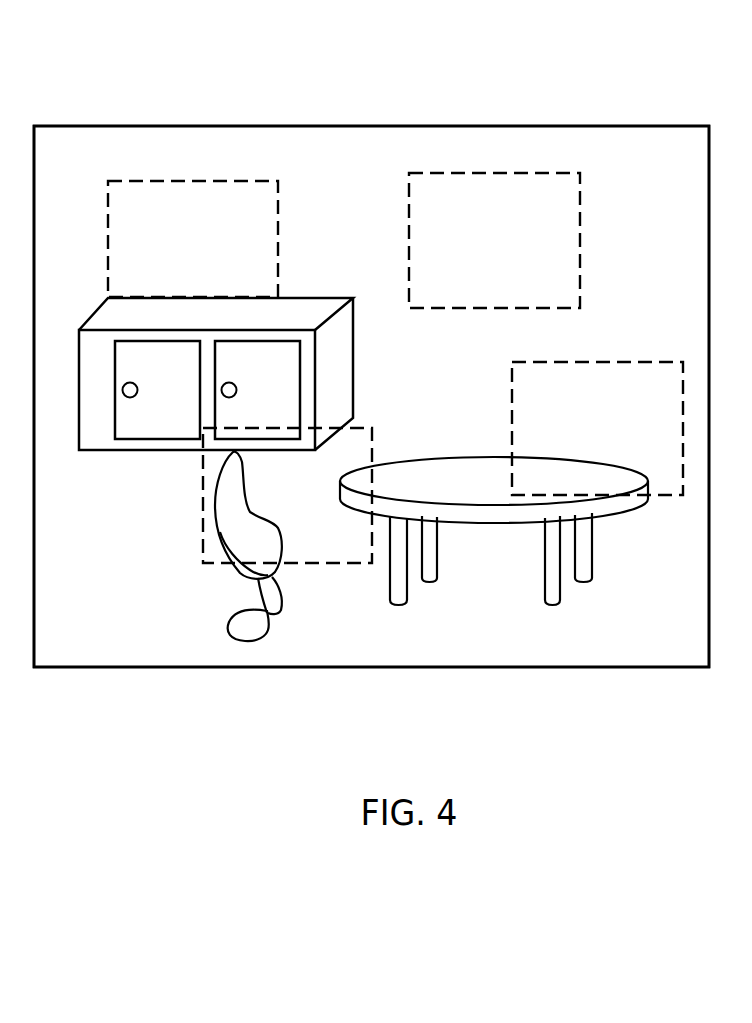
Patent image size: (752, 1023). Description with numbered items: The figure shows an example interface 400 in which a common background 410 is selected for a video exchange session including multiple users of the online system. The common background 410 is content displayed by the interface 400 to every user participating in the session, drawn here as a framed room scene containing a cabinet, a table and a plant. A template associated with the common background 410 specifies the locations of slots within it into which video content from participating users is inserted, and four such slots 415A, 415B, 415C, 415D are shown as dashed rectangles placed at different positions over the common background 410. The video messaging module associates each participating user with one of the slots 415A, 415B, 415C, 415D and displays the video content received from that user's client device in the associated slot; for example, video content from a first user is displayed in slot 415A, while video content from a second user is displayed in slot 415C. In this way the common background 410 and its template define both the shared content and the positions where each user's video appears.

The interface 400 is at (372, 127).
The common background 410 is at (92, 161).
The slot 415A is at (222, 259).
The slot 415B is at (568, 441).
The slot 415C is at (258, 507).
The slot 415D is at (465, 252).